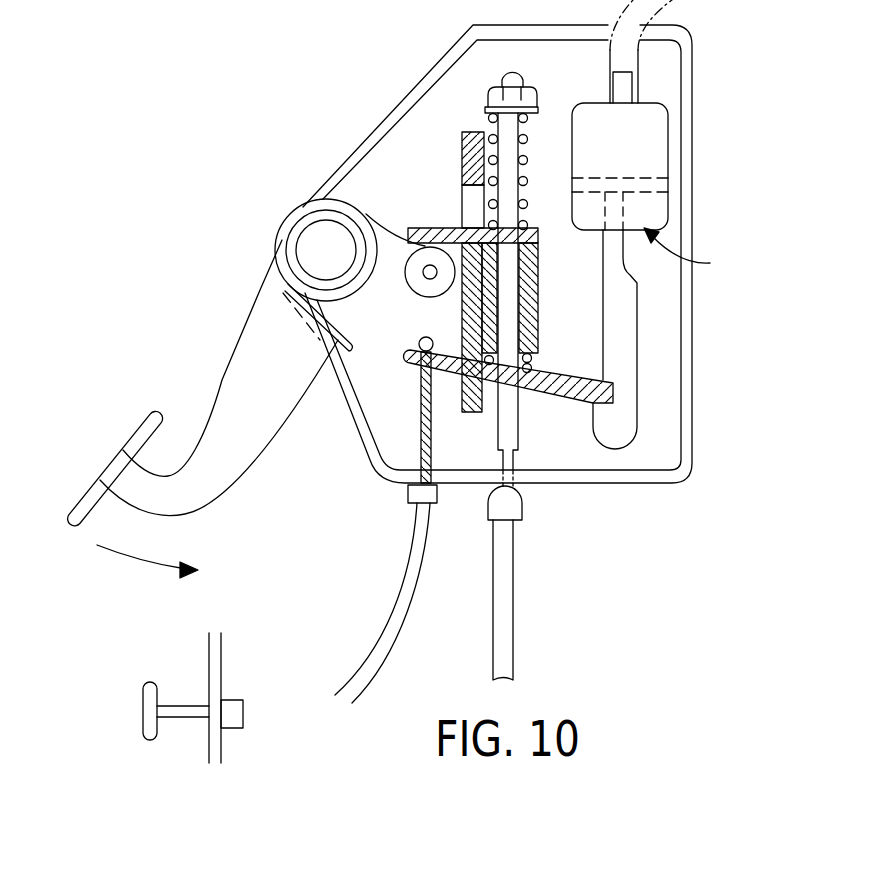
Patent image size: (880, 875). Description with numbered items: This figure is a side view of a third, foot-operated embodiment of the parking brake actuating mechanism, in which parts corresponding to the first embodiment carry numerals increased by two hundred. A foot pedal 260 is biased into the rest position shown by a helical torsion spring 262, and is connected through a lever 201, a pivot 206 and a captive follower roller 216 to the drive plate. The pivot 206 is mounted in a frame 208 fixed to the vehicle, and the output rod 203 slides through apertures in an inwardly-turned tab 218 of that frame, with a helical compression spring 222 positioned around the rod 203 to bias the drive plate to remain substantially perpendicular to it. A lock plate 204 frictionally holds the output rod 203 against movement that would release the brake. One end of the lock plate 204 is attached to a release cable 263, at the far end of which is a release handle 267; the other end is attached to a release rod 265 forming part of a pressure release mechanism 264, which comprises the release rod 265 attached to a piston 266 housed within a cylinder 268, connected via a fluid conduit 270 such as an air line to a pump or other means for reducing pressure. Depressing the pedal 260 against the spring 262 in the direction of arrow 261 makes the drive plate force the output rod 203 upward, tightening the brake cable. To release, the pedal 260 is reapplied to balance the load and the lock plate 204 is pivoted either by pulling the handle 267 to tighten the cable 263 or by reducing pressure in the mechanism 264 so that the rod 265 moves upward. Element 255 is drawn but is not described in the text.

The lever 201 is at (232, 413).
The output rod 203 is at (503, 127).
The lock plate 204 is at (555, 388).
The pivot 206 is at (310, 240).
The frame 208 is at (463, 202).
The captive follower roller 216 is at (428, 278).
The inwardly-turned tab 218 is at (530, 310).
The helical compression spring 222 is at (492, 160).
The spring seat 255 is at (522, 368).
The foot pedal 260 is at (97, 473).
The arrow 261 is at (103, 547).
The helical torsion spring 262 is at (353, 353).
The release cable 263 is at (408, 613).
The pressure release mechanism 264 is at (707, 257).
The release rod 265 is at (630, 368).
The piston 266 is at (643, 189).
The release handle 267 is at (163, 660).
The cylinder 268 is at (653, 143).
The fluid conduit 270 is at (660, 12).